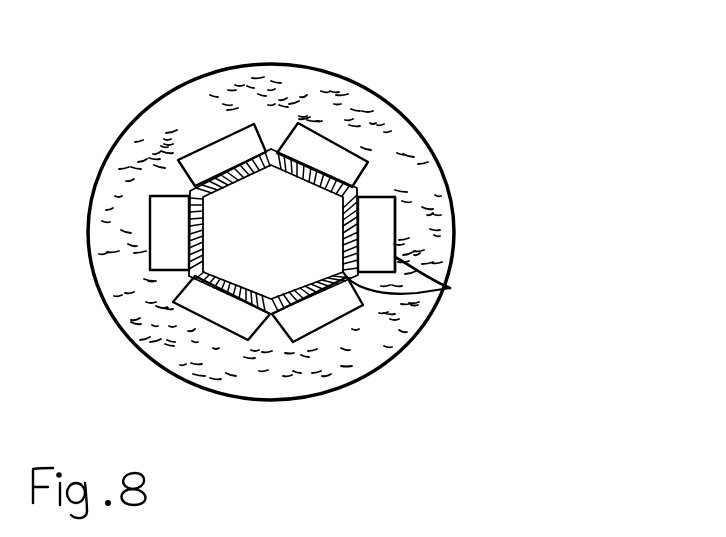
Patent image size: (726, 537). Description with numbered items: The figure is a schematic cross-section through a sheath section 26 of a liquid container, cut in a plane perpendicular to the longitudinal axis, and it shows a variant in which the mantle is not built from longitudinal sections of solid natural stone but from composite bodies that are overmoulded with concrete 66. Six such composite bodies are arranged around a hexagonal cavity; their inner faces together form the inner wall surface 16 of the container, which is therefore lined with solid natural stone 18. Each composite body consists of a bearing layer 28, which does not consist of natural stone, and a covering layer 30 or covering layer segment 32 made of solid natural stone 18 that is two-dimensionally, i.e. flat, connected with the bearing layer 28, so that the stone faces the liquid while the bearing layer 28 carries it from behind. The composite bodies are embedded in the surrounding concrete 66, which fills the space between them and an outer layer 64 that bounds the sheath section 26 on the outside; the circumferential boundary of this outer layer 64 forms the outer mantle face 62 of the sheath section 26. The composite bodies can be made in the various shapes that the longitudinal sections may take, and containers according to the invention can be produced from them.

The inner wall surface 16 is at (209, 251).
The natural stone 18 is at (350, 226).
The sheath section 26 is at (508, 273).
The bearing layer 28 is at (375, 228).
The covering layer 30 is at (362, 192).
The covering layer segment 32 is at (447, 278).
The outer mantle face 62 is at (352, 310).
The outer layer 64 is at (419, 332).
The concrete 66 is at (296, 377).